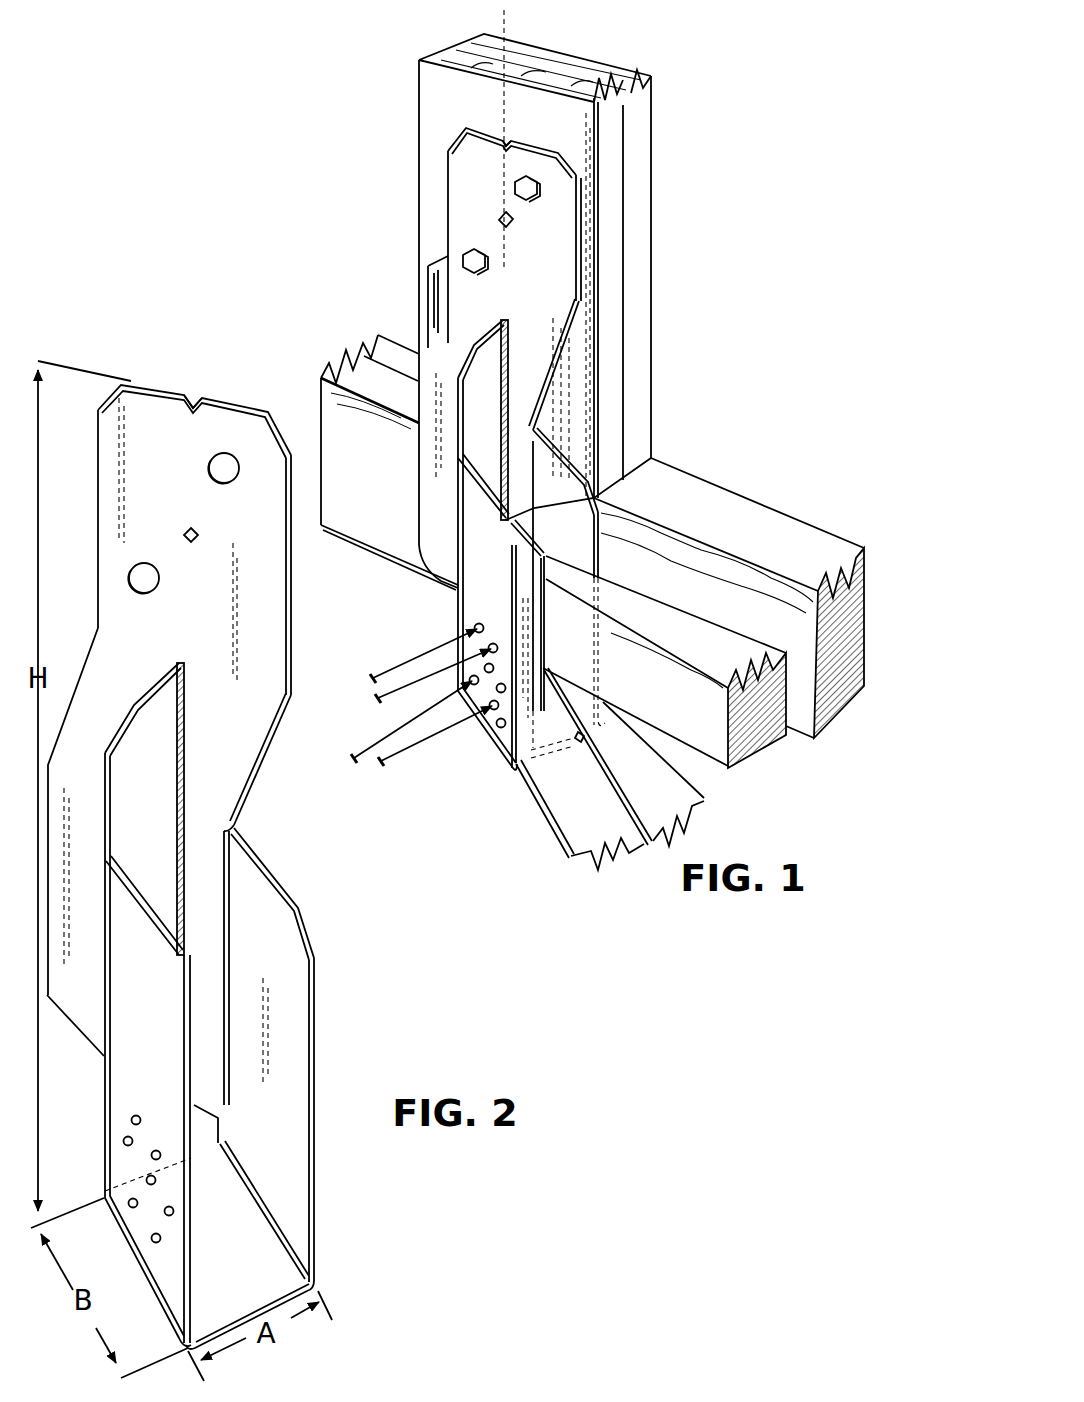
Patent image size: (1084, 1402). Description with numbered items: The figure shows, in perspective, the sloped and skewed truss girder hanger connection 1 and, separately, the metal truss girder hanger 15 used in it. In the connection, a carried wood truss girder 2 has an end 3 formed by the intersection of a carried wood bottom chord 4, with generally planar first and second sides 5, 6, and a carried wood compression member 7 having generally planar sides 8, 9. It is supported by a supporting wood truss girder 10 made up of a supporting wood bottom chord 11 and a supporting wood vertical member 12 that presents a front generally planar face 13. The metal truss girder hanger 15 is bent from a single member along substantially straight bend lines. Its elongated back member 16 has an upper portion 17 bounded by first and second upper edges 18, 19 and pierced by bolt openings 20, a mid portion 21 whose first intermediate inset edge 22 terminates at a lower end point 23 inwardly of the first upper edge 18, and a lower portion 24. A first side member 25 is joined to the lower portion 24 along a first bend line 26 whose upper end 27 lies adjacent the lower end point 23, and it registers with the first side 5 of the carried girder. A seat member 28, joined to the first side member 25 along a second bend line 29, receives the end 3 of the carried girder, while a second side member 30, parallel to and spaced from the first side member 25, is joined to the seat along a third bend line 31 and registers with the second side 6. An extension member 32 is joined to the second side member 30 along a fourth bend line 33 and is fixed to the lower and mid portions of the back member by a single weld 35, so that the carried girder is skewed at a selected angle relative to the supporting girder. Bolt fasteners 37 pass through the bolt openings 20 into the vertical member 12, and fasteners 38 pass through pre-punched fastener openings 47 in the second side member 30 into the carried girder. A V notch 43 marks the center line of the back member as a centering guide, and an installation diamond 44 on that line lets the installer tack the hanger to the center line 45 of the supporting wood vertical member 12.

In FIG. 1, the truss girder hanger connection 1 is at (677, 131).
In FIG. 1, the carried wood truss girder 2 is at (538, 829).
In FIG. 1, the end 3 is at (530, 782).
In FIG. 1, the carried wood bottom chord 4 is at (743, 764).
In FIG. 1, the first side 5 is at (792, 692).
In FIG. 1, the second side 6 is at (679, 735).
In FIG. 1, the carried wood compression member 7 is at (560, 848).
In FIG. 1, the side 8 is at (703, 797).
In FIG. 1, the side 9 is at (577, 825).
In FIG. 1, the supporting wood truss girder 10 is at (666, 446).
In FIG. 1, the supporting wood bottom chord 11 is at (760, 492).
In FIG. 1, the supporting wood vertical member 12 is at (657, 256).
In FIG. 1, the front generally planar face 13 is at (432, 110).
In FIG. 2, the metal truss girder hanger 15 is at (143, 382).
In FIG. 1, the metal truss girder hanger 15 is at (574, 151).
In FIG. 2, the elongated back member 16 is at (95, 436).
In FIG. 1, the elongated back member 16 is at (444, 152).
In FIG. 2, the upper portion 17 is at (141, 520).
In FIG. 1, the upper portion 17 is at (470, 183).
In FIG. 2, the first upper edge 18 is at (292, 600).
In FIG. 1, the first upper edge 18 is at (575, 207).
In FIG. 2, the second upper edge 19 is at (97, 487).
In FIG. 1, the second upper edge 19 is at (447, 227).
In FIG. 2, the bolt openings 20 is at (153, 563).
In FIG. 2, the mid portion 21 is at (92, 696).
In FIG. 1, the mid portion 21 is at (440, 340).
In FIG. 2, the first intermediate inset edge 22 is at (267, 760).
In FIG. 1, the first intermediate inset edge 22 is at (548, 383).
In FIG. 2, the lower end point 23 is at (236, 828).
In FIG. 1, the lower end point 23 is at (533, 432).
In FIG. 2, the lower portion 24 is at (86, 990).
In FIG. 1, the lower portion 24 is at (438, 526).
In FIG. 2, the first side member 25 is at (315, 1025).
In FIG. 1, the first side member 25 is at (608, 528).
In FIG. 2, the first bend line 26 is at (222, 926).
In FIG. 1, the first bend line 26 is at (528, 497).
In FIG. 2, the upper end 27 is at (247, 881).
In FIG. 1, the upper end 27 is at (565, 471).
In FIG. 2, the seat member 28 is at (212, 1275).
In FIG. 1, the seat member 28 is at (527, 772).
In FIG. 2, the second bend line 29 is at (240, 1194).
In FIG. 2, the second side member 30 is at (130, 1040).
In FIG. 1, the second side member 30 is at (474, 580).
In FIG. 2, the third bend line 31 is at (137, 1256).
In FIG. 1, the third bend line 31 is at (483, 735).
In FIG. 2, the extension member 32 is at (130, 780).
In FIG. 1, the extension member 32 is at (467, 435).
In FIG. 2, the fourth bend line 33 is at (105, 910).
In FIG. 1, the fourth bend line 33 is at (455, 552).
In FIG. 2, the weld 35 is at (183, 690).
In FIG. 1, the weld 35 is at (504, 325).
In FIG. 1, the bolt fasteners 37 is at (488, 263).
In FIG. 1, the fasteners 38 is at (372, 682).
In FIG. 2, the V notch 43 is at (188, 394).
In FIG. 1, the V notch 43 is at (507, 141).
In FIG. 2, the installation diamond 44 is at (197, 532).
In FIG. 1, the installation diamond 44 is at (498, 232).
In FIG. 1, the center line 45 is at (507, 36).
In FIG. 2, the pre-punched fastener openings 47 is at (137, 1119).
In FIG. 1, the pre-punched fastener openings 47 is at (480, 628).